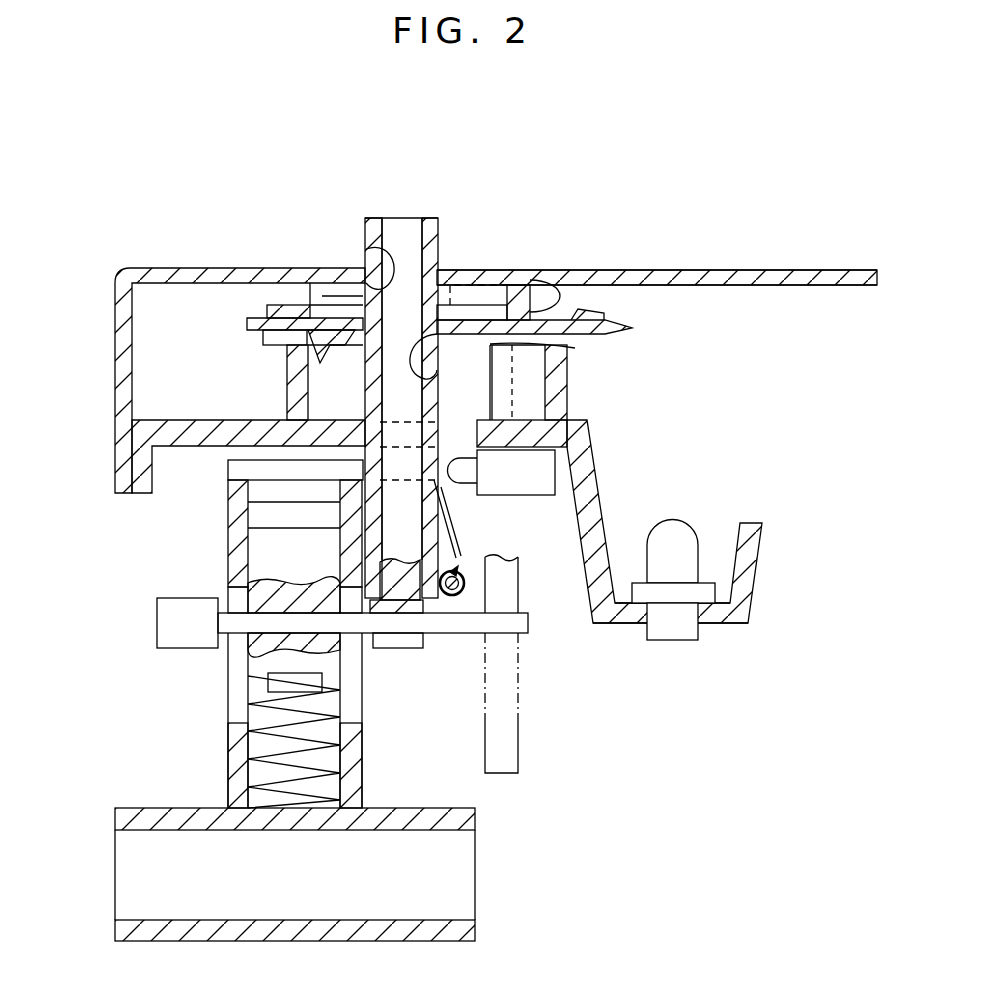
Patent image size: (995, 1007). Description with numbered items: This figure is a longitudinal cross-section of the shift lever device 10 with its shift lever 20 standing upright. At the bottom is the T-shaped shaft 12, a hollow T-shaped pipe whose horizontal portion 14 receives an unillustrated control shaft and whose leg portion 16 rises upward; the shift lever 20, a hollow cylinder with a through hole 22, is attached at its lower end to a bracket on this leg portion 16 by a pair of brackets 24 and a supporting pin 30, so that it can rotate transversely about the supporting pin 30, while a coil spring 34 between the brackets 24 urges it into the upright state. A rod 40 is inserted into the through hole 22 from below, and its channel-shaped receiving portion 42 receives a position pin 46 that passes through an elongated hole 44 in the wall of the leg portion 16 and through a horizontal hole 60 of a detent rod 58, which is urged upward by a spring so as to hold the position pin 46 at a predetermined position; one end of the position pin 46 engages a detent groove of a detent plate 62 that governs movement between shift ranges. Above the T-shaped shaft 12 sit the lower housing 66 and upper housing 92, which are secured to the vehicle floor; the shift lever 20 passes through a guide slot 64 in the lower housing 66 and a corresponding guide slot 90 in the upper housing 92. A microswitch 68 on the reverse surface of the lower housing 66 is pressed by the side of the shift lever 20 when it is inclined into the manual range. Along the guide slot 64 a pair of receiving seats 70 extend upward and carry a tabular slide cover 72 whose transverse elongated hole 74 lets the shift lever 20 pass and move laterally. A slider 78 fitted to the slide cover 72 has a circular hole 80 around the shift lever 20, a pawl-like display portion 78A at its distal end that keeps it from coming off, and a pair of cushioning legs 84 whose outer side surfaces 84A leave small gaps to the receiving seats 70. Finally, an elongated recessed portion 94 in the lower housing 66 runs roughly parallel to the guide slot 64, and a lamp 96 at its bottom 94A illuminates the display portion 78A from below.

The shift lever device 10 is at (707, 248).
The T-shaped shaft 12 is at (130, 941).
The horizontal portion 14 is at (468, 943).
The leg portion 16 is at (359, 742).
The shift lever 20 is at (438, 248).
The through hole 22 is at (366, 223).
The brackets 24 is at (450, 522).
The supporting pin 30 is at (472, 585).
The coil spring 34 is at (462, 560).
The rod 40 is at (440, 230).
The receiving portion 42 is at (388, 650).
The elongated hole 44 is at (241, 722).
The position pin 46 is at (452, 634).
The detent rod 58 is at (272, 538).
The horizontal hole 60 is at (258, 642).
The detent plate 62 is at (518, 681).
The guide slot 64 is at (326, 424).
The lower housing 66 is at (580, 419).
The microswitch 68 is at (529, 496).
The receiving seats 70 is at (284, 368).
The slide cover 72 is at (300, 297).
The elongated hole 74 is at (320, 300).
The slider 78 is at (538, 278).
The display portion 78A is at (608, 322).
The circular hole 80 is at (438, 383).
The cushioning legs 84 is at (300, 347).
The outer side surfaces 84A is at (490, 335).
The guide slot 90 is at (366, 258).
The upper housing 92 is at (768, 290).
The recessed portion 94 is at (600, 471).
The bottom 94A is at (620, 626).
The lamp 96 is at (689, 521).